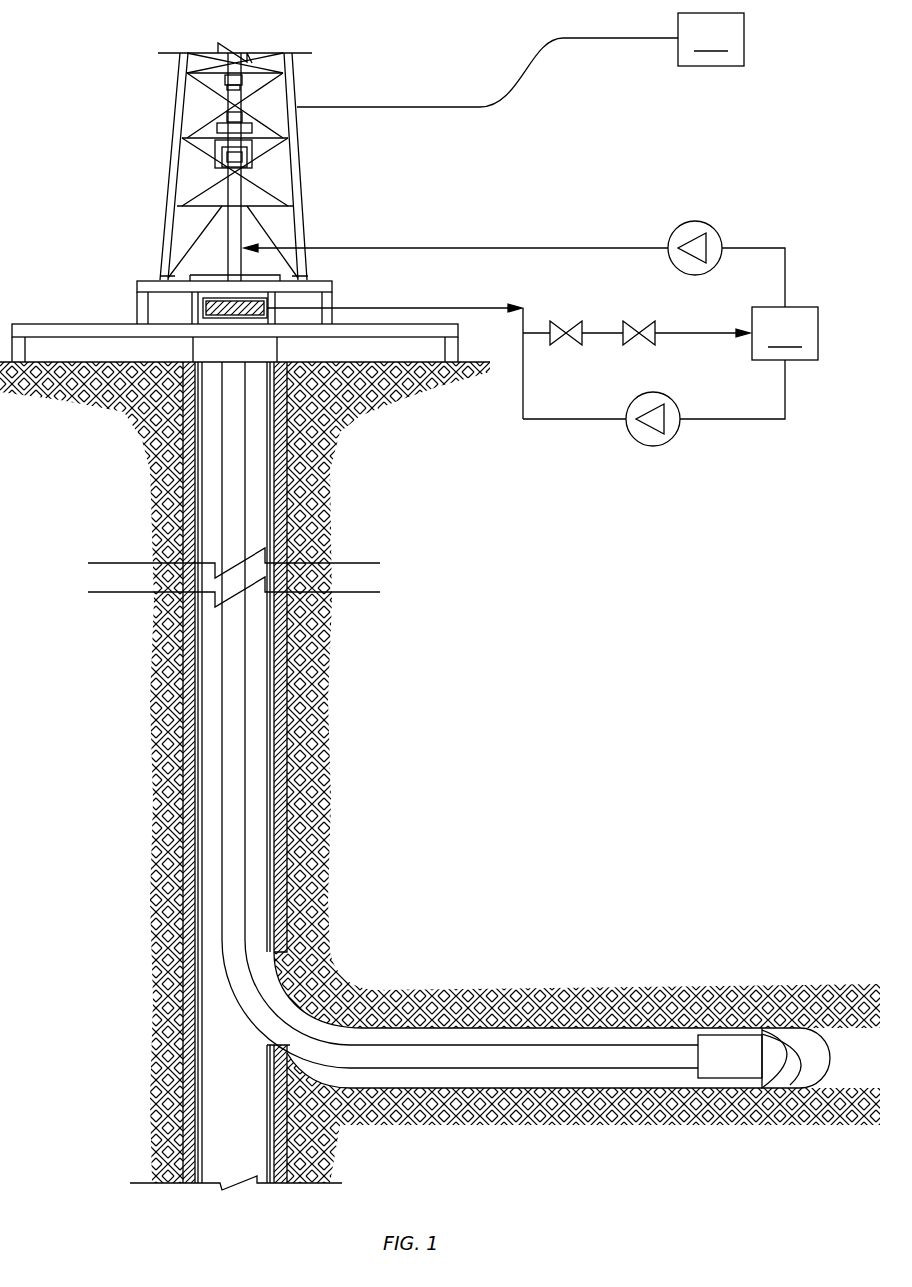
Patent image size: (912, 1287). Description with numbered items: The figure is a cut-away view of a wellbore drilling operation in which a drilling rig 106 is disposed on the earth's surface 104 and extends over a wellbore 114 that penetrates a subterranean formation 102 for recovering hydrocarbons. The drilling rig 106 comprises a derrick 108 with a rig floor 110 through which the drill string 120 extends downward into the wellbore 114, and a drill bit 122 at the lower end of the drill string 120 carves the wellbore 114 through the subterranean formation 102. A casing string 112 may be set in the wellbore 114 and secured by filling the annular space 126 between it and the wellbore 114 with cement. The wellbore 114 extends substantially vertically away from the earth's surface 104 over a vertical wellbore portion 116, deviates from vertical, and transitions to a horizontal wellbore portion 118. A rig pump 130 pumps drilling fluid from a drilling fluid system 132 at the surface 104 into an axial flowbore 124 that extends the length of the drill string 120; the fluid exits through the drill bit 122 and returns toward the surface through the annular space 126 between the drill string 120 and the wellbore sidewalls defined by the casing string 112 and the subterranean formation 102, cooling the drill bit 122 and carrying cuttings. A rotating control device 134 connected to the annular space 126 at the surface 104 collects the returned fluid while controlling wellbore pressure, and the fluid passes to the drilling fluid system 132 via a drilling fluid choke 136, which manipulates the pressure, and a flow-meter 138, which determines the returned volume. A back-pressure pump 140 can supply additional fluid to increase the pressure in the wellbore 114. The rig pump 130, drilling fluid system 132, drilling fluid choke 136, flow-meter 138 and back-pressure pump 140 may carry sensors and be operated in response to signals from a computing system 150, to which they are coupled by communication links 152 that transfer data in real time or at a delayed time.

The subterranean formation 102 is at (348, 415).
The earth's surface 104 is at (52, 360).
The drilling rig 106 is at (88, 14).
The derrick 108 is at (180, 108).
The rig floor 110 is at (137, 282).
The casing string 112 is at (210, 514).
The wellbore 114 is at (183, 541).
The vertical wellbore portion 116 is at (287, 692).
The horizontal wellbore portion 118 is at (568, 1092).
The drill string 120 is at (250, 640).
The drill bit 122 is at (770, 1040).
The axial flowbore 124 is at (240, 488).
The annular space 126 is at (212, 490).
The rig pump 130 is at (712, 223).
The drilling fluid system 132 is at (785, 333).
The rotating control device 134 is at (203, 306).
The drilling fluid choke 136 is at (566, 321).
The flow-meter 138 is at (639, 321).
The back-pressure pump 140 is at (670, 393).
The computing system 150 is at (711, 39).
The communication link 152 is at (522, 72).